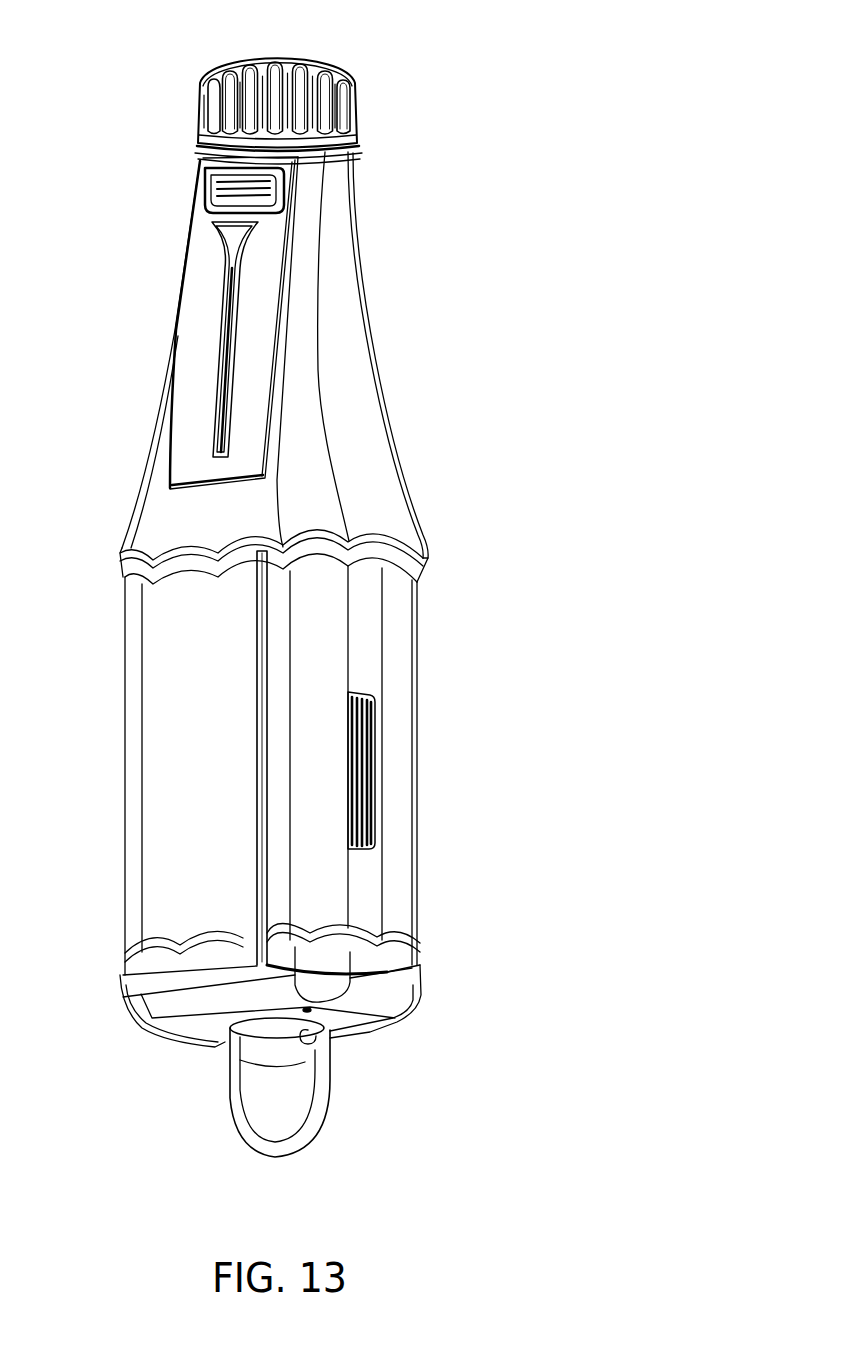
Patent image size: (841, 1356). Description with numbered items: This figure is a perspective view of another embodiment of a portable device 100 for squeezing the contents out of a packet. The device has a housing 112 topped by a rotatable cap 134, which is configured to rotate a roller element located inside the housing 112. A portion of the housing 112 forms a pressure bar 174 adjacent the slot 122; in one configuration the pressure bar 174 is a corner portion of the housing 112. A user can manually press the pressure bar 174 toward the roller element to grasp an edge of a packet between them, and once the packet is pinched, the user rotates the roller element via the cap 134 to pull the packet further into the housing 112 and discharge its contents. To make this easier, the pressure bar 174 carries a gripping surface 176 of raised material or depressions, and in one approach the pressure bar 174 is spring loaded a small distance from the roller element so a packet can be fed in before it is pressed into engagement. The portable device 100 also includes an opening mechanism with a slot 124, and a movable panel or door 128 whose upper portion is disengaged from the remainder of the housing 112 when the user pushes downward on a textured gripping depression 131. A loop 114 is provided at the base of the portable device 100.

The portable device 100 is at (430, 58).
The housing 112 is at (358, 362).
The loop 114 is at (303, 1133).
The slot 122 is at (256, 840).
The slot 124 is at (222, 312).
The movable panel or door 128 is at (211, 255).
The textured gripping depression 131 is at (212, 190).
The rotatable cap 134 is at (210, 106).
The pressure bar 174 is at (360, 877).
The gripping surface 176 is at (373, 753).